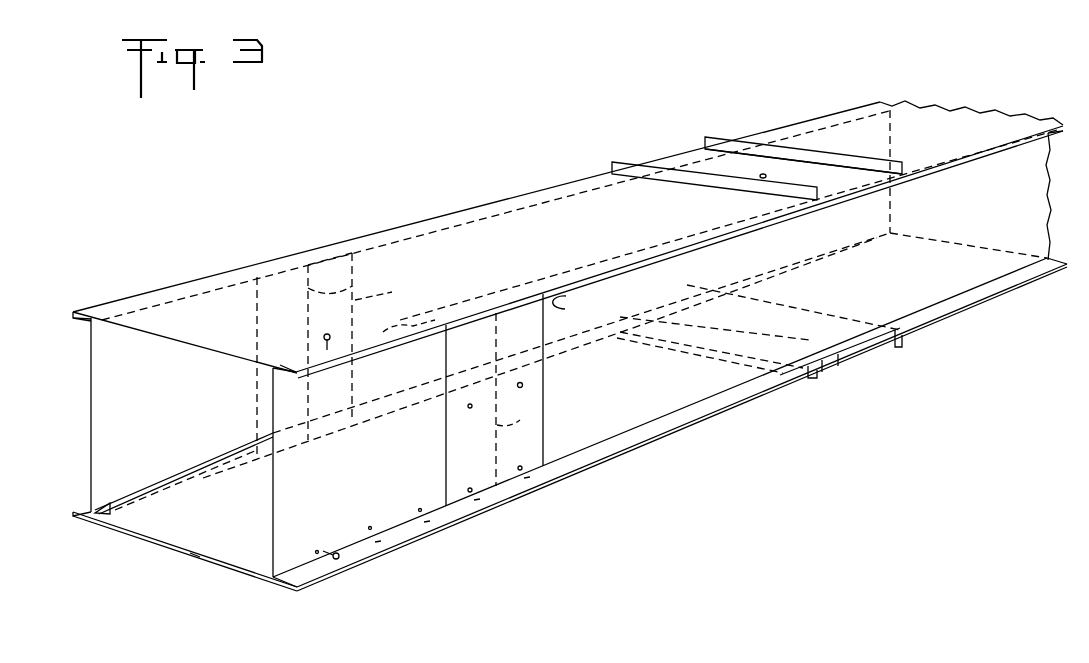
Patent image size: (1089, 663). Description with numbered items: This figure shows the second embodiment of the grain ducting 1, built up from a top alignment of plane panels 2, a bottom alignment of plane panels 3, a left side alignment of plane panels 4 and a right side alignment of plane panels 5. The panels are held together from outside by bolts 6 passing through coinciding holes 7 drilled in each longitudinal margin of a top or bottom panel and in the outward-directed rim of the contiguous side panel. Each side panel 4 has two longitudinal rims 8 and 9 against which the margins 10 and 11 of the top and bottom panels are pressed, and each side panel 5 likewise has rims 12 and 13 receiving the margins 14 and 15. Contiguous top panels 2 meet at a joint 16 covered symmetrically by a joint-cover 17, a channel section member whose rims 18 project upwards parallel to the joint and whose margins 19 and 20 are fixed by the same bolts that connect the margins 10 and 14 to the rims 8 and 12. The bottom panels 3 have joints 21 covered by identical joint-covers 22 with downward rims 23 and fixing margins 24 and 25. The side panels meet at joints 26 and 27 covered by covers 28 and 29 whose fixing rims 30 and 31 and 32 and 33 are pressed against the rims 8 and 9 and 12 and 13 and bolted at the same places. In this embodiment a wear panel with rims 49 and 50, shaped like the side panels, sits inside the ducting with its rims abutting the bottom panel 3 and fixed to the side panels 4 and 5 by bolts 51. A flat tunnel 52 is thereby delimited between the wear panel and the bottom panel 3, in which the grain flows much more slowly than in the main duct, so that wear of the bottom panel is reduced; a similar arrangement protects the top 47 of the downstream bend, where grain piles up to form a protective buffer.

The ducting 1 is at (518, 182).
The top plane panel 2 is at (564, 237).
The bottom plane panel 3 is at (223, 565).
The left side plane panel 4 is at (89, 439).
The right side plane panel 5 is at (287, 493).
The bolt 6 is at (322, 338).
The hole 7 is at (409, 319).
The longitudinal rim of left side panel 8 is at (79, 321).
The longitudinal rim of left side panel 9 is at (86, 503).
The margin of top panel 10 is at (89, 306).
The margin of bottom panel 11 is at (80, 522).
The longitudinal rim of right side panel 12 is at (283, 380).
The longitudinal rim of right side panel 13 is at (303, 573).
The margin of top panel 14 is at (295, 364).
The margin of bottom panel 15 is at (287, 593).
The joint 16 is at (712, 182).
The joint-cover 17 is at (835, 168).
The rim of joint-cover 18 is at (758, 190).
The margin of joint-cover 19 is at (682, 152).
The margin of joint-cover 20 is at (878, 190).
The joint 21 is at (808, 338).
The joint-cover 22 is at (875, 347).
The rim of joint-cover 23 is at (810, 378).
The fixing margin of joint-cover 24 is at (645, 312).
The fixing margin of joint-cover 25 is at (838, 364).
The joint of left side panels 26 is at (347, 274).
The joint of right side panels 27 is at (488, 415).
The cover 28 is at (384, 290).
The cover 29 is at (528, 435).
The fixing rim of cover 30 is at (318, 262).
The fixing rim of cover 31 is at (338, 440).
The fixing rim of cover 32 is at (582, 307).
The fixing rim of cover 33 is at (548, 474).
The top of downstream bend 47 is at (198, 538).
The rim of wear panel 49 is at (267, 565).
The rim of wear panel 50 is at (106, 506).
The bolt 51 is at (331, 550).
The tunnel 52 is at (197, 550).